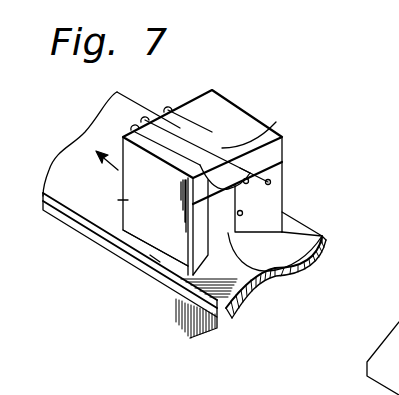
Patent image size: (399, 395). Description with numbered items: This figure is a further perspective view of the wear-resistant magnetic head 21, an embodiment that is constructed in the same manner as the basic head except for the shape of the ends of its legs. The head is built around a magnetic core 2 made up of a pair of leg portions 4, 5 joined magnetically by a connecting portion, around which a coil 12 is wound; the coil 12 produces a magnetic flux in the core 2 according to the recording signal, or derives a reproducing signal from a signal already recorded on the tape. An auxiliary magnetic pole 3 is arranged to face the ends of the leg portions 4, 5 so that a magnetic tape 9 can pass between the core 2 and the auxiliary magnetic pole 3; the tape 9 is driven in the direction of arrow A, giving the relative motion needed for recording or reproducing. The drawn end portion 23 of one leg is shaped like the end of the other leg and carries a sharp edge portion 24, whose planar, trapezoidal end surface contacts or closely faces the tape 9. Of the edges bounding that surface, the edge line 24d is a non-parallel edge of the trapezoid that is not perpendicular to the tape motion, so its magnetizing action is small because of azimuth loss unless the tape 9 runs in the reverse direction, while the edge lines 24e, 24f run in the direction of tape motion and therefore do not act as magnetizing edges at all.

The magnetic head 21 is at (242, 82).
The magnetic core 2 is at (247, 112).
The coil 12 is at (268, 127).
The leg portion 4 is at (283, 168).
The sharp edge portion 24 is at (283, 217).
The edge line 24d is at (316, 238).
The edge line 24e is at (278, 271).
The edge line 24f is at (160, 237).
The magnetic tape 9 is at (318, 264).
The leg portion 5 is at (130, 199).
The end portion 23 is at (150, 283).
The auxiliary magnetic pole 3 is at (167, 307).